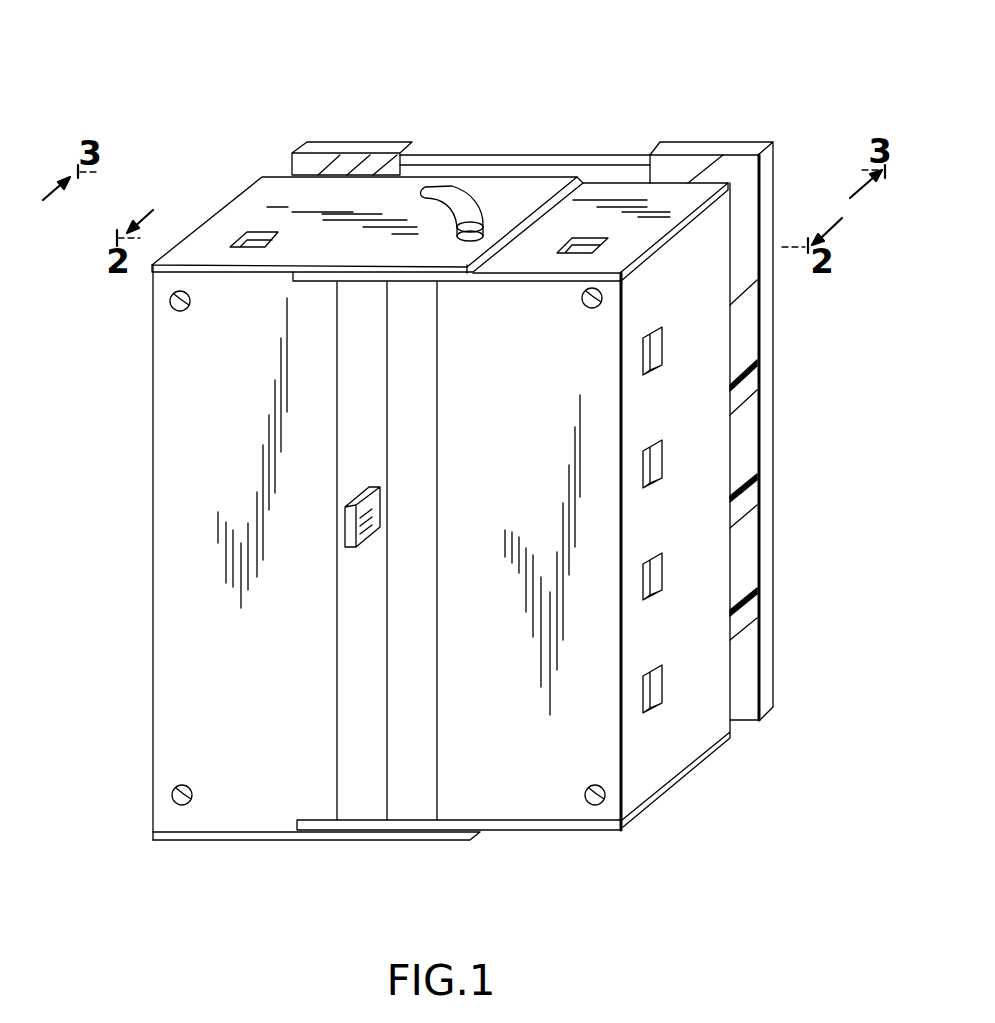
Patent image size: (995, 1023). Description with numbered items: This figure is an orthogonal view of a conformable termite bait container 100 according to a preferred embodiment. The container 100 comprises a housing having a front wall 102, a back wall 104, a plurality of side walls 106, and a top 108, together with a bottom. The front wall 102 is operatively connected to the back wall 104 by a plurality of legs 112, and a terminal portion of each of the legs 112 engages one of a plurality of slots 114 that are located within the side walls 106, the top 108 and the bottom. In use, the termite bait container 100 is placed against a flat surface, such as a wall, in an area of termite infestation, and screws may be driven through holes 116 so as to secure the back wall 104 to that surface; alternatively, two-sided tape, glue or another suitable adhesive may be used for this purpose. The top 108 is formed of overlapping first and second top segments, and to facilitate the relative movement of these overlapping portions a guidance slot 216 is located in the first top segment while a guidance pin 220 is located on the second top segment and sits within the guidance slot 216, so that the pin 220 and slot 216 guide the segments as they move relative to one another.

The conformable termite bait container 100 is at (598, 42).
The front wall 102 is at (262, 672).
The back wall 104 is at (771, 517).
The side walls 106 is at (663, 752).
The top 108 is at (238, 176).
The legs 112 is at (747, 387).
The slots 114 is at (662, 458).
The holes 116 is at (189, 307).
The guidance slot 216 is at (458, 190).
The guidance pin 220 is at (488, 176).